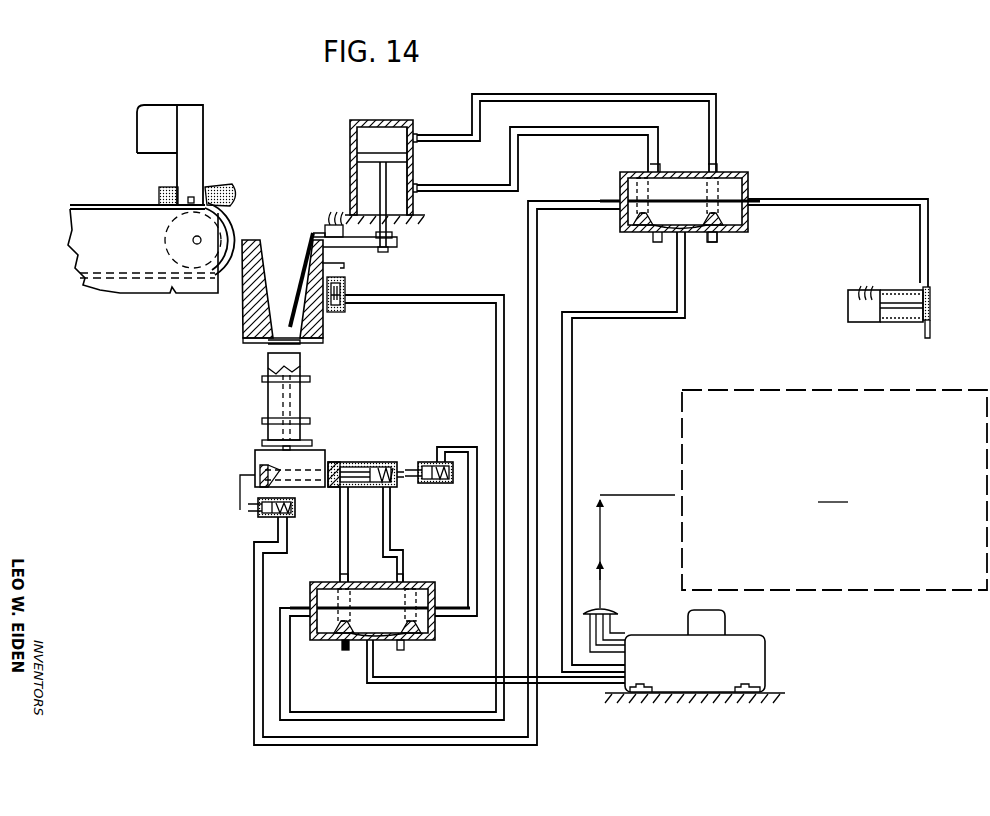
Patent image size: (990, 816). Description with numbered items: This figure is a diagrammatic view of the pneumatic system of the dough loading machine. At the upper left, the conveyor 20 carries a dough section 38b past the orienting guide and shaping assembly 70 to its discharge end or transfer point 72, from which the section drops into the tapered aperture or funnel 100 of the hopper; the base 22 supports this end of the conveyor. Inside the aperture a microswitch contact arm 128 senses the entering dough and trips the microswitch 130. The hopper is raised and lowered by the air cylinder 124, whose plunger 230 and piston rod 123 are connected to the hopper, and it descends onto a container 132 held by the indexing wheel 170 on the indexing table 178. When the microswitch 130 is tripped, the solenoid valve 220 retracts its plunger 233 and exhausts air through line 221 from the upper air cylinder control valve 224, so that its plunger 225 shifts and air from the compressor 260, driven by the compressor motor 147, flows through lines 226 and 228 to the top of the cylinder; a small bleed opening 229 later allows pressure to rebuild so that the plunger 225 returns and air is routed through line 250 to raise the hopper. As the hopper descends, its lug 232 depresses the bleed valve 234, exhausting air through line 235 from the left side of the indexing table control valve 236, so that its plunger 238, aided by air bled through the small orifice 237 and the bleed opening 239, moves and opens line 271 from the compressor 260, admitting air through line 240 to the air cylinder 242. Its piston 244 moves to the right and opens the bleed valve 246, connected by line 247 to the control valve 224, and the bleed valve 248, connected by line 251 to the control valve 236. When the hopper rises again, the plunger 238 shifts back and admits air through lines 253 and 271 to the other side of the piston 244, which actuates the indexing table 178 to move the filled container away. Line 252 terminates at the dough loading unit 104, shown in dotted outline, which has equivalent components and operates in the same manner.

The orienting guide and shaping assembly 70 is at (134, 134).
The conveyor 20 is at (122, 205).
The base frame 22 is at (134, 243).
The dough section 38b is at (230, 177).
The discharge end or transfer point 72 is at (235, 232).
The tapered aperture or funnel 100 is at (262, 301).
The microswitch contact arm 128 is at (303, 270).
The microswitch 130 is at (328, 220).
The plunger 230 is at (372, 152).
The piston rod 123 is at (382, 183).
The air cylinder 124 is at (413, 172).
The line 228 is at (692, 94).
The line 250 is at (560, 137).
The plunger 225 is at (725, 181).
The bleed opening 229 is at (713, 215).
The upper air cylinder control valve 224 is at (722, 237).
The line 221 is at (845, 206).
The solenoid valve 220 is at (884, 324).
The plunger 233 is at (932, 301).
The line 226 is at (573, 412).
The dough loading unit 104 is at (793, 499).
The line 252 is at (600, 630).
The compressor 260 is at (735, 633).
The compressor motor 147 is at (722, 612).
The line 271 is at (455, 668).
The line 235 is at (497, 362).
The line 247 is at (258, 598).
The lug 232 is at (346, 266).
The bleed valve 234 is at (346, 307).
The indexing wheel 170 is at (262, 380).
The container 132 is at (302, 368).
The indexing table 178 is at (350, 458).
The air cylinder 242 is at (390, 462).
The piston 244 is at (338, 480).
The bleed valve 248 is at (436, 484).
The bleed valve 246 is at (262, 520).
The line 251 is at (468, 552).
The line 240 is at (341, 558).
The line 253 is at (390, 554).
The bleed opening 239 is at (330, 632).
The plunger 238 is at (352, 602).
The indexing table control valve 236 is at (334, 645).
The small orifice 237 is at (418, 632).